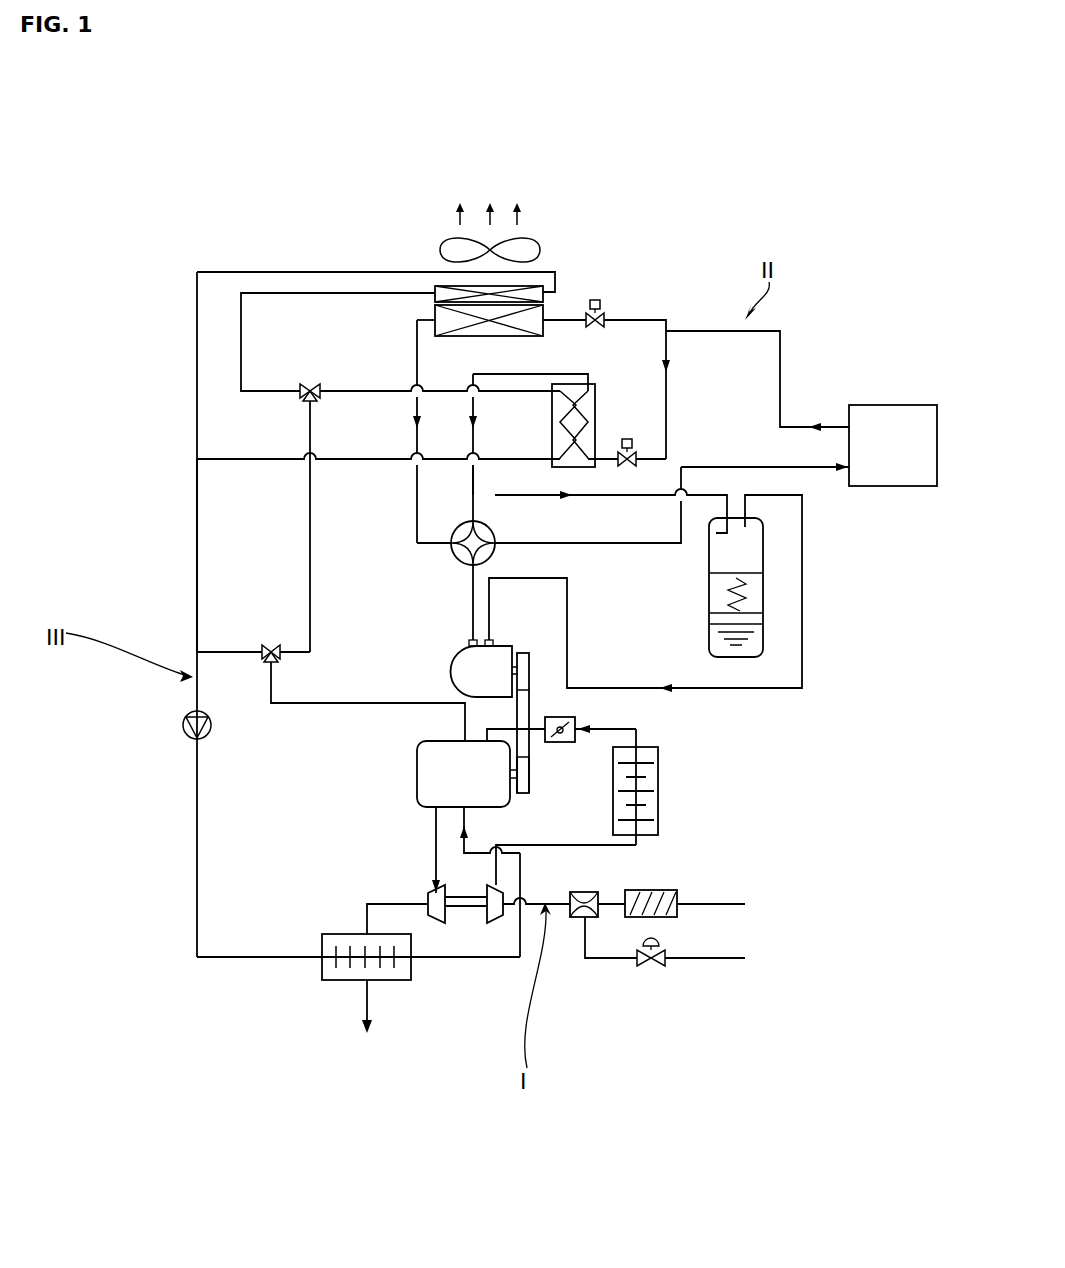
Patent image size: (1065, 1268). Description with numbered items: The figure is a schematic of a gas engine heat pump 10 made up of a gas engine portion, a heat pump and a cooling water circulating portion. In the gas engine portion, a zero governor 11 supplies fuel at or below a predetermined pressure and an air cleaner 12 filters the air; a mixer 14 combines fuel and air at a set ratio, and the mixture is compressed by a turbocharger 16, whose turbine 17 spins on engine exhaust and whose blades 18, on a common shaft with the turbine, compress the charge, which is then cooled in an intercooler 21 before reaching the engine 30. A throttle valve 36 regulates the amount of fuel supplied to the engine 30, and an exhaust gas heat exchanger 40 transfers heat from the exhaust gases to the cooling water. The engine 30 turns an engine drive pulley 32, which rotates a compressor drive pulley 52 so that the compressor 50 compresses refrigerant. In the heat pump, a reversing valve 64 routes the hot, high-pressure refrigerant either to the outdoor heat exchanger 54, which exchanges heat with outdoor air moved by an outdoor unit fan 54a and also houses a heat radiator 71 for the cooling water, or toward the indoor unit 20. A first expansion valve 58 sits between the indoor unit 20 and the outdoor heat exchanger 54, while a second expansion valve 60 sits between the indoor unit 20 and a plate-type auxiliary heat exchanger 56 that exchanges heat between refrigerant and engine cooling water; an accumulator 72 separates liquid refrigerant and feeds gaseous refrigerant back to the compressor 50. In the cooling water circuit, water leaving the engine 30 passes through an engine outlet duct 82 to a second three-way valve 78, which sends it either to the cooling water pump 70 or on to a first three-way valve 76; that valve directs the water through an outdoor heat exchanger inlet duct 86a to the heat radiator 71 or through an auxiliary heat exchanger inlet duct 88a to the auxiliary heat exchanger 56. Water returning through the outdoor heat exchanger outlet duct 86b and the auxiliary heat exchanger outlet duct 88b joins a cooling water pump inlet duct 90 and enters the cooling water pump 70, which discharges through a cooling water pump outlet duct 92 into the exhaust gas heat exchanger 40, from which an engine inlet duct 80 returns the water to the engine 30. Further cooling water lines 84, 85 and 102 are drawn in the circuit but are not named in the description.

The gas engine heat pump 10 is at (121, 151).
The zero governor 11 is at (650, 966).
The air cleaner 12 is at (657, 889).
The mixer 14 is at (580, 920).
The turbocharger 16 is at (475, 922).
The turbine 17 is at (427, 893).
The blades 18 is at (505, 890).
The indoor unit 20 is at (905, 404).
The intercooler 21 is at (660, 795).
The engine 30 is at (416, 777).
The engine drive pulley 32 is at (530, 776).
The throttle valve 36 is at (580, 720).
The exhaust gas heat exchanger 40 is at (336, 933).
The compressor 50 is at (449, 672).
The compressor drive pulley 52 is at (523, 653).
The outdoor heat exchanger 54 is at (548, 318).
The outdoor unit fan 54a is at (541, 250).
The auxiliary heat exchanger 56 is at (596, 412).
The first expansion valve 58 is at (602, 314).
The second expansion valve 60 is at (628, 466).
The reversing valve 64 is at (459, 558).
The cooling water pump 70 is at (182, 727).
The heat radiator 71 is at (535, 290).
The accumulator 72 is at (765, 556).
The first three-way valve 76 is at (313, 384).
The second three-way valve 78 is at (282, 662).
The engine inlet duct 80 is at (445, 958).
The engine outlet duct 82 is at (318, 705).
The coolant pipe 84 is at (312, 578).
The coolant pipe 85 is at (228, 651).
The outdoor heat exchanger inlet duct 86a is at (290, 294).
The outdoor heat exchanger outlet duct 86b is at (291, 271).
The auxiliary heat exchanger inlet duct 88a is at (368, 393).
The auxiliary heat exchanger outlet duct 88b is at (368, 461).
The cooling water pump inlet duct 90 is at (196, 578).
The cooling water pump outlet duct 92 is at (198, 786).
The coolant pipe 102 is at (199, 520).